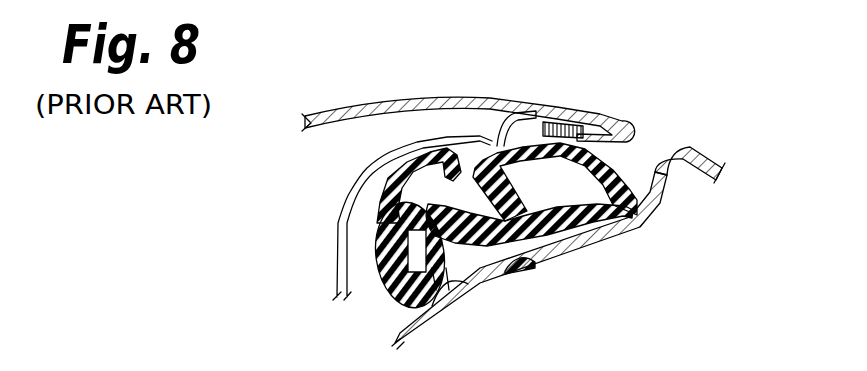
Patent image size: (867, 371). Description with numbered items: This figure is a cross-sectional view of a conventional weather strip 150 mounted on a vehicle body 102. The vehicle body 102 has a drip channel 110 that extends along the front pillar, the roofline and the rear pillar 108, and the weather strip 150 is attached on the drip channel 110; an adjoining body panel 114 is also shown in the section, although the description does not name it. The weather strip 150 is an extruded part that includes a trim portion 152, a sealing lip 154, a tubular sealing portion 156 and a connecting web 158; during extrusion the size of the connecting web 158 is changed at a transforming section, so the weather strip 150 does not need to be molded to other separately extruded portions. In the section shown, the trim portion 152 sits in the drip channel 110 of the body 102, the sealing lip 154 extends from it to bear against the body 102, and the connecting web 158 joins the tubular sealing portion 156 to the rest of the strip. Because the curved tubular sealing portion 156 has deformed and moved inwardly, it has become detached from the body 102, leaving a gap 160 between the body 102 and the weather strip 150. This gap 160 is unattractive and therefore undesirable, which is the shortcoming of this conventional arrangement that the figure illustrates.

The vehicle body 102 is at (610, 238).
The rear pillar 108 is at (700, 150).
The drip channel 110 is at (463, 290).
The roof panel 114 is at (472, 97).
The weather strip 150 is at (534, 128).
The trim portion 152 is at (390, 293).
The sealing lip 154 is at (392, 173).
The tubular sealing portion 156 is at (598, 124).
The connecting web 158 is at (518, 277).
The gap 160 is at (645, 194).